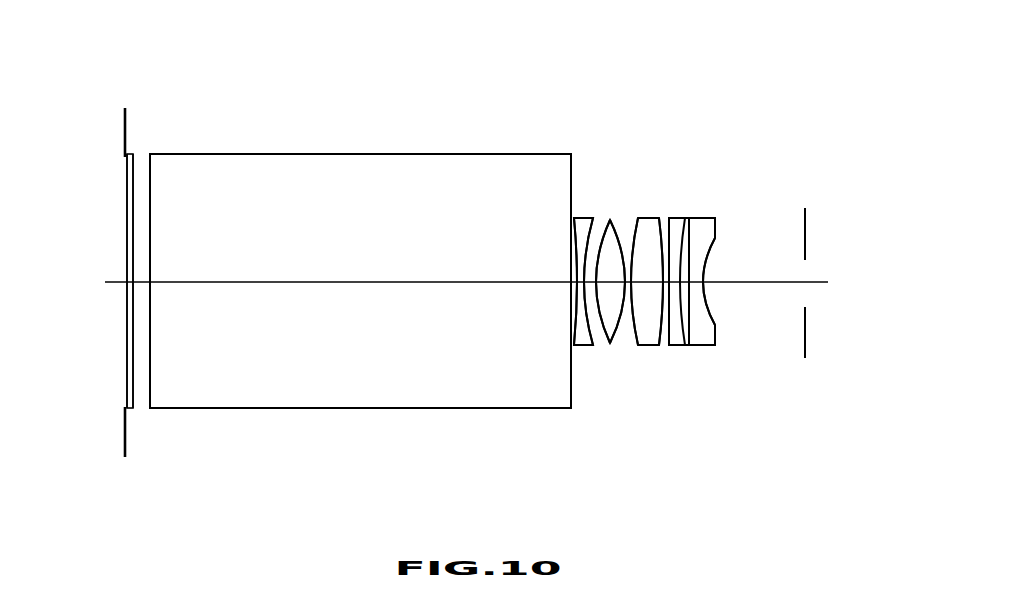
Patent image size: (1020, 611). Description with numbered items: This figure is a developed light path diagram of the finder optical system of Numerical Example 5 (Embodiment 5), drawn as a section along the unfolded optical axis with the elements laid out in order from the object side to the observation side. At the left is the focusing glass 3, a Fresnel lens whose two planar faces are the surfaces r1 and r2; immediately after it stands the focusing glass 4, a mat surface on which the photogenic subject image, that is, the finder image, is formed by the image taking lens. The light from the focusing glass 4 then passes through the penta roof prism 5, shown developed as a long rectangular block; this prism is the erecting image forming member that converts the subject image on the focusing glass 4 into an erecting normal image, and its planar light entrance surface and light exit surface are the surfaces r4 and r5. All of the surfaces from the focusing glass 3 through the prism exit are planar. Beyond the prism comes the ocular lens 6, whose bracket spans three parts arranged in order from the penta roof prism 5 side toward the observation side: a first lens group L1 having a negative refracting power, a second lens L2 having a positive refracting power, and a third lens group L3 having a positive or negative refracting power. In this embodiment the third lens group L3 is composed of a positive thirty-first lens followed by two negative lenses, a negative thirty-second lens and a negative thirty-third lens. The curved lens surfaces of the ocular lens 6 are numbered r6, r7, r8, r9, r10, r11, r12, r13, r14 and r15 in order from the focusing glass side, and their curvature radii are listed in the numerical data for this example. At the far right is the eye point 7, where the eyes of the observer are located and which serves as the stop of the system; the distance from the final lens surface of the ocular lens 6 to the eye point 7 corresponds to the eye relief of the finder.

The focusing glass (Fresnel lens) 3 is at (91, 251).
The focusing glass (mat surface) 4 is at (121, 254).
The penta roof prism 5 is at (360, 245).
The ocular lens 6 is at (575, 90).
The eye point 7 is at (851, 261).
The first lens group L1 is at (606, 316).
The second lens L2 is at (628, 219).
The third lens group L3 is at (715, 281).
The surface r1 is at (124, 137).
The surface r2 is at (127, 218).
The surface r4 is at (152, 207).
The surface r5 is at (570, 177).
The surface r6 is at (580, 345).
The surface r7 is at (600, 343).
The surface r8 is at (598, 228).
The surface r9 is at (630, 235).
The surface r10 is at (645, 235).
The surface r11 is at (665, 235).
The surface r12 is at (677, 345).
The surface r13 is at (685, 318).
The surface r14 is at (692, 250).
The surface r15 is at (707, 255).